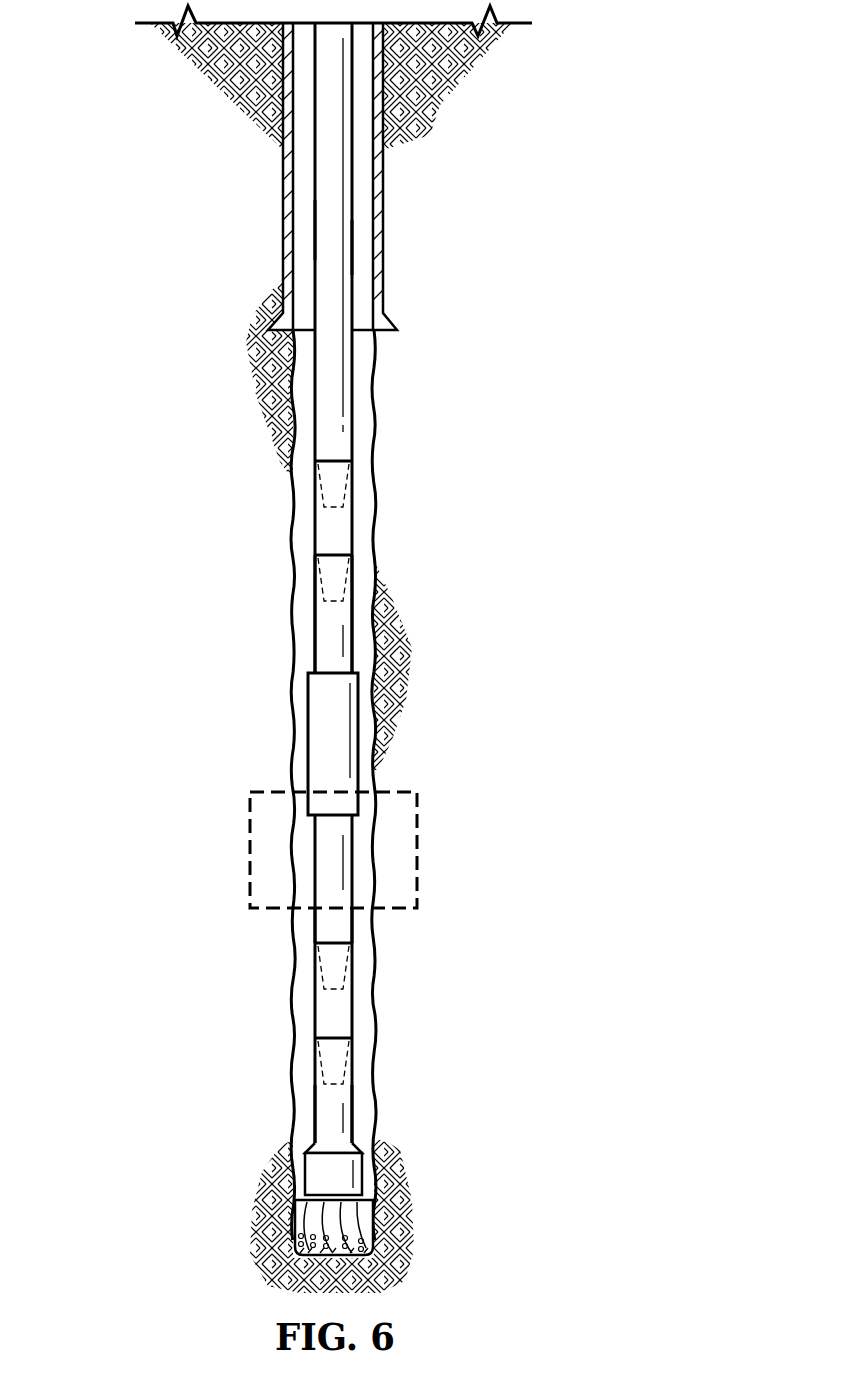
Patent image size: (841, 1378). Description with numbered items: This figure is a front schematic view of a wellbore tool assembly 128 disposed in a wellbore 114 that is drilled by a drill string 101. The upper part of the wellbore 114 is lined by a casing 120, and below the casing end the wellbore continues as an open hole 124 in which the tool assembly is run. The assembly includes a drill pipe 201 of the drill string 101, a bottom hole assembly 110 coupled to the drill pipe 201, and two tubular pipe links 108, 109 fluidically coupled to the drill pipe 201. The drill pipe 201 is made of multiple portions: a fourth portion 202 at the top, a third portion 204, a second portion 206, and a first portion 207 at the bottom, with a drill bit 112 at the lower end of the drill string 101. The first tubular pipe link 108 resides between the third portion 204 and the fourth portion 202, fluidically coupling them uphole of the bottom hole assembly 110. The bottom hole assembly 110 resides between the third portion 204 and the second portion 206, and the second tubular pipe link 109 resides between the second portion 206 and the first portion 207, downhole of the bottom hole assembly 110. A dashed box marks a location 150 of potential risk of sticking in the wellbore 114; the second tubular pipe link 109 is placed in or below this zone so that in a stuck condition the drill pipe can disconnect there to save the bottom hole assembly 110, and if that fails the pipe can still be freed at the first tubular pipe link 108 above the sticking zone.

The wellbore 114 is at (102, 90).
The casing 120 is at (378, 95).
The drill pipe 201 is at (313, 232).
The fourth portion 202 is at (353, 248).
The drill string 101 is at (362, 404).
The wellbore tool assembly 128 is at (215, 483).
The first tubular pipe link 108 is at (352, 512).
The third portion 204 is at (352, 612).
The open hole 124 is at (305, 653).
The bottom hole assembly 110 is at (307, 722).
The location of potential risk of sticking 150 is at (250, 850).
The second portion 206 is at (315, 927).
The second tubular pipe link 109 is at (353, 1005).
The first portion 207 is at (315, 1088).
The drill bit 112 is at (373, 1200).